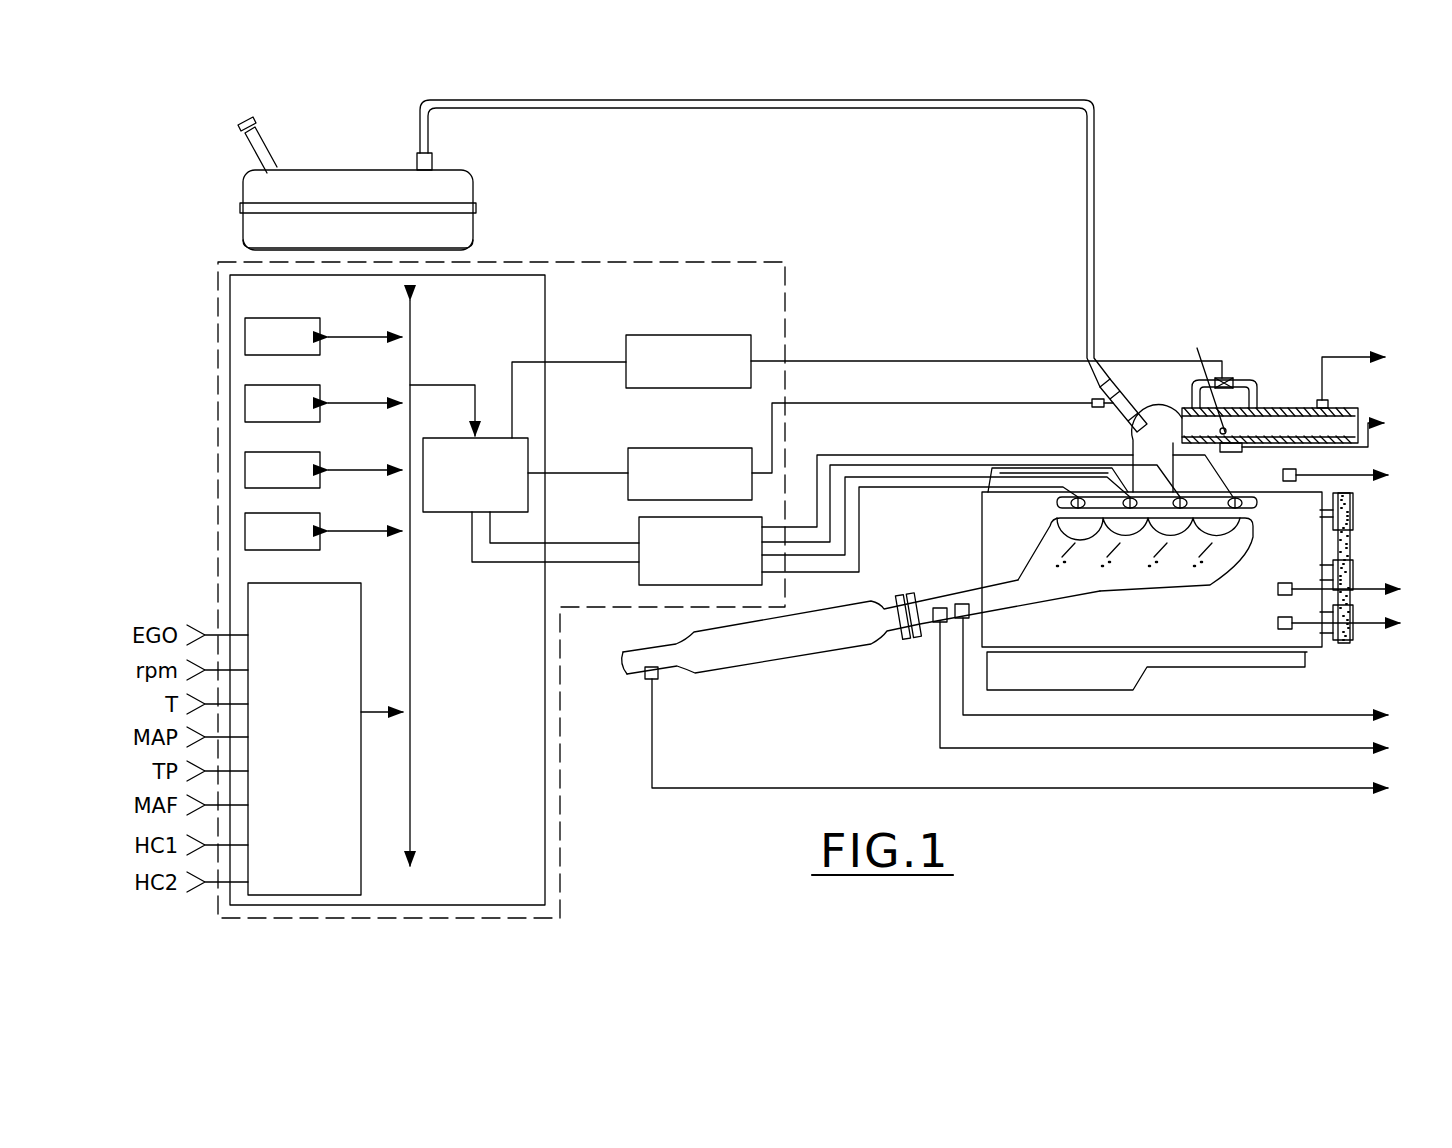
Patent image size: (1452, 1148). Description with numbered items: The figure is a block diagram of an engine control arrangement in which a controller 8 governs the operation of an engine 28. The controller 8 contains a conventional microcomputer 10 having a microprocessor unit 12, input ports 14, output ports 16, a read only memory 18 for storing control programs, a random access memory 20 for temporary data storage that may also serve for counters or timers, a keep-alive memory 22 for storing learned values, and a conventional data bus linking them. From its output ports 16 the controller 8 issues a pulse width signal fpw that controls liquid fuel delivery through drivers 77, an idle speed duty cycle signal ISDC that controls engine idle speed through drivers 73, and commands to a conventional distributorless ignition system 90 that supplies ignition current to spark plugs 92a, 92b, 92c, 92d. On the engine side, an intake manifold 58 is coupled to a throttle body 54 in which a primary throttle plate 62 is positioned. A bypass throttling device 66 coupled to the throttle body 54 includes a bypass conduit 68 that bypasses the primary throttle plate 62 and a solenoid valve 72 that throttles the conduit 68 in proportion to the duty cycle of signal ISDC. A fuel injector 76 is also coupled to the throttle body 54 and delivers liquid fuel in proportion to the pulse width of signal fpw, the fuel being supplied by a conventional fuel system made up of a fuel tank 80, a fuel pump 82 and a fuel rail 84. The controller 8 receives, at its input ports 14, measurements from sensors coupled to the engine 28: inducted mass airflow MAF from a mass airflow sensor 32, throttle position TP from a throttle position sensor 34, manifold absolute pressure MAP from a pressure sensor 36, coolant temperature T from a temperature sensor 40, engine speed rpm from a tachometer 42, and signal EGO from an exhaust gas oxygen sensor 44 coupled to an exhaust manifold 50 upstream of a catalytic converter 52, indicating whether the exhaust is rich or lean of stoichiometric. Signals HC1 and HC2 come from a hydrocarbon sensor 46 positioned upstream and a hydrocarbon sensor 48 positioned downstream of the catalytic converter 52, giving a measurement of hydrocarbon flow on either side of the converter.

The controller 8 is at (652, 262).
The microcomputer 10 is at (218, 285).
The microprocessor unit 12 is at (245, 337).
The input ports 14 is at (360, 611).
The output ports 16 is at (453, 513).
The read only memory 18 is at (245, 403).
The random access memory 20 is at (245, 470).
The keep-alive memory 22 is at (245, 531).
The engine 28 is at (1376, 535).
The mass airflow sensor 32 is at (1327, 400).
The throttle position sensor 34 is at (1235, 452).
The pressure sensor 36 is at (1298, 471).
The temperature sensor 40 is at (1278, 589).
The tachometer 42 is at (1278, 623).
The exhaust gas oxygen sensor 44 is at (933, 624).
The hydrocarbon sensor 46 is at (962, 604).
The hydrocarbon sensor 48 is at (645, 675).
The exhaust manifold 50 is at (1135, 573).
The catalytic converter 52 is at (804, 656).
The throttle body 54 is at (1140, 406).
The intake manifold 58 is at (1003, 467).
The primary throttle plate 62 is at (1201, 378).
The bypass throttling device 66 is at (1264, 382).
The bypass conduit 68 is at (1258, 377).
The solenoid valve 72 is at (1230, 378).
The drivers 73 is at (700, 335).
The fuel injector 76 is at (1092, 400).
The drivers 77 is at (700, 448).
The fuel tank 80 is at (336, 170).
The fuel pump 82 is at (432, 160).
The fuel rail 84 is at (1097, 157).
The distributorless ignition system 90 is at (639, 583).
The spark plug 92a is at (1078, 497).
The spark plug 92b is at (1130, 497).
The spark plug 92c is at (1187, 503).
The spark plug 92d is at (1243, 503).